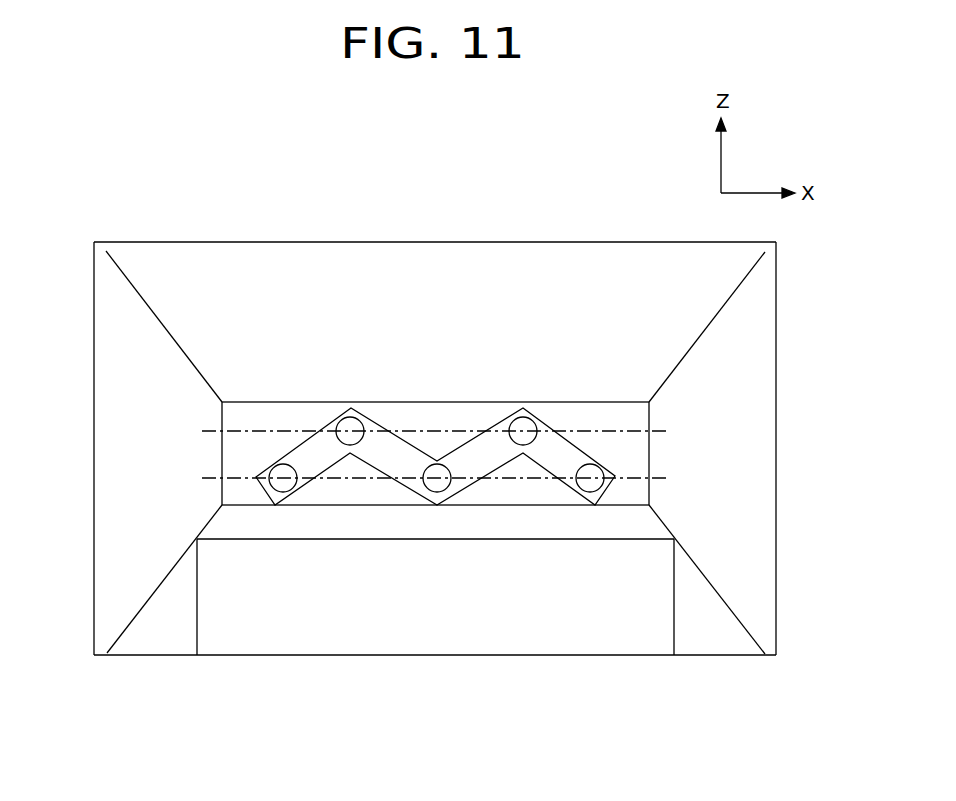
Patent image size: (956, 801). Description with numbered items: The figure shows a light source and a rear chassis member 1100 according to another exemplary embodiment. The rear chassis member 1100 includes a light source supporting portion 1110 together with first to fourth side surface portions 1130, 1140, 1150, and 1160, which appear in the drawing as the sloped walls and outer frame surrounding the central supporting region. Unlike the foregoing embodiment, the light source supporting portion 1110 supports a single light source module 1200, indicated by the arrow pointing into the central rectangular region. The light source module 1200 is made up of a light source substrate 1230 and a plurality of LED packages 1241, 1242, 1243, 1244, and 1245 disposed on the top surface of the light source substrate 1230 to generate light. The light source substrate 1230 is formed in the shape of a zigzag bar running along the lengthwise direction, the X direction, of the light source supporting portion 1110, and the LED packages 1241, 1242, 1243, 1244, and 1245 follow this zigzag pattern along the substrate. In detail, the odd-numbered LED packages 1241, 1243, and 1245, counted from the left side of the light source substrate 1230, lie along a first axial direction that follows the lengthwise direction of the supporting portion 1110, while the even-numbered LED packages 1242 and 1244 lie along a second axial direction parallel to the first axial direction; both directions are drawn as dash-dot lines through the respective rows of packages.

The rear chassis member 1100 is at (433, 430).
The light source supporting portion 1110 is at (268, 412).
The first side surface portion 1130 is at (363, 645).
The second side surface portion 1140 is at (431, 252).
The third side surface portion 1150 is at (110, 413).
The fourth side surface portion 1160 is at (755, 376).
The light source module 1200 is at (325, 453).
The light source substrate 1230 is at (558, 453).
The LED package 1241 is at (277, 485).
The LED package 1242 is at (350, 417).
The LED package 1243 is at (437, 487).
The LED package 1244 is at (523, 417).
The LED package 1245 is at (590, 485).